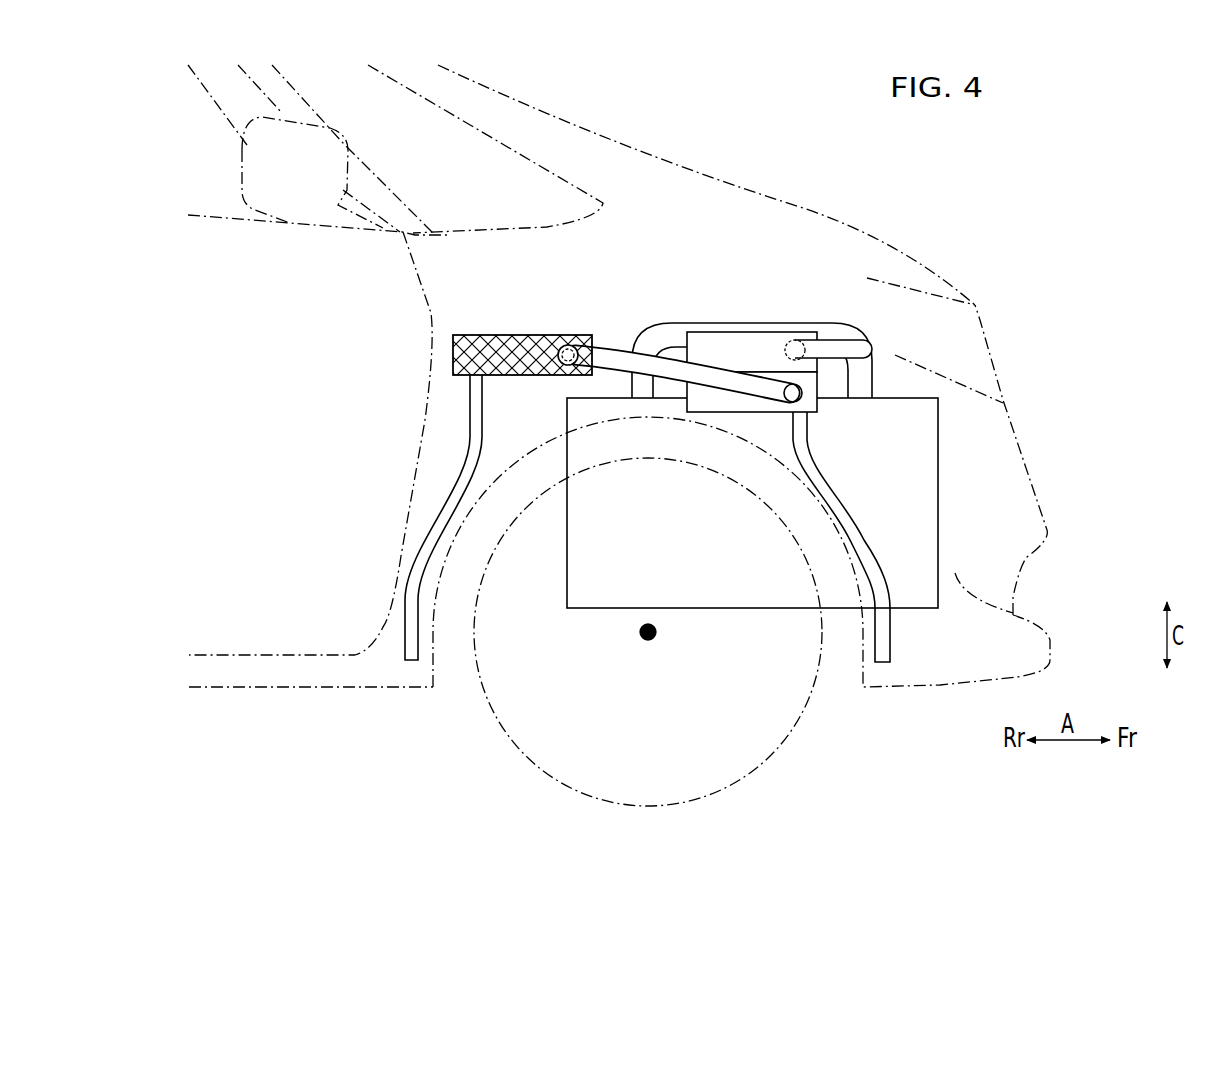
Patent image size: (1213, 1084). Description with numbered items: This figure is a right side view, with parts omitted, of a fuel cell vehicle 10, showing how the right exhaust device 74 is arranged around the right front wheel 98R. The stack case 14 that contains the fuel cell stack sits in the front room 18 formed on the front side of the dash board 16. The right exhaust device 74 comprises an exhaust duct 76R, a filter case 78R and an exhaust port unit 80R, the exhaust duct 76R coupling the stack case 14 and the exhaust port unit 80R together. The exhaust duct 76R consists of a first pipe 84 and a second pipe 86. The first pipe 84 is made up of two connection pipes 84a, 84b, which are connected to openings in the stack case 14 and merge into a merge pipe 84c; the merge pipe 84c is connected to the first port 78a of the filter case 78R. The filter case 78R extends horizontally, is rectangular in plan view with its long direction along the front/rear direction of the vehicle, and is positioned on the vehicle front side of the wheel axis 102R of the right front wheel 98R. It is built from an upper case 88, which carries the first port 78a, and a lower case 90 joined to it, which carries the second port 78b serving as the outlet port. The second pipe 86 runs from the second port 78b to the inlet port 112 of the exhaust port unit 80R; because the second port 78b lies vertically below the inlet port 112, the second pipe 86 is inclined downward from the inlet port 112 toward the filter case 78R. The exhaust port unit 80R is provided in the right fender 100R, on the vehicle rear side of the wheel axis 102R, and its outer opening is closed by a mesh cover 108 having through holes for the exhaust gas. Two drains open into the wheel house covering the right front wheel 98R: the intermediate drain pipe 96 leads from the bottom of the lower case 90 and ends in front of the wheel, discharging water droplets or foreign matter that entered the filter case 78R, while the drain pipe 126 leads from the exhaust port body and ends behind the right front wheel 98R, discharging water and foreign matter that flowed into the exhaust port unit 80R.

The fuel cell vehicle 10 is at (987, 144).
The stack case 14 is at (941, 456).
The dash board 16 is at (800, 207).
The front room 18 is at (737, 228).
The right exhaust device 74 is at (741, 354).
The exhaust duct 76R is at (863, 322).
The filter case 78R is at (752, 380).
The first port 78a is at (805, 341).
The second port 78b is at (803, 400).
The exhaust port unit 80R is at (522, 315).
The first pipe 84 is at (775, 333).
The connection pipe 84a is at (868, 381).
The connection pipe 84b is at (648, 337).
The merge pipe 84c is at (833, 339).
The second pipe 86 is at (609, 352).
The upper case 88 is at (750, 345).
The lower case 90 is at (710, 402).
The intermediate drain pipe 96 is at (862, 530).
The right front wheel 98R is at (510, 737).
The right fender 100R is at (678, 198).
The wheel axis 102R is at (651, 640).
The cover 108 is at (523, 337).
The inlet port 112 is at (566, 345).
The drain pipe 126 is at (414, 573).